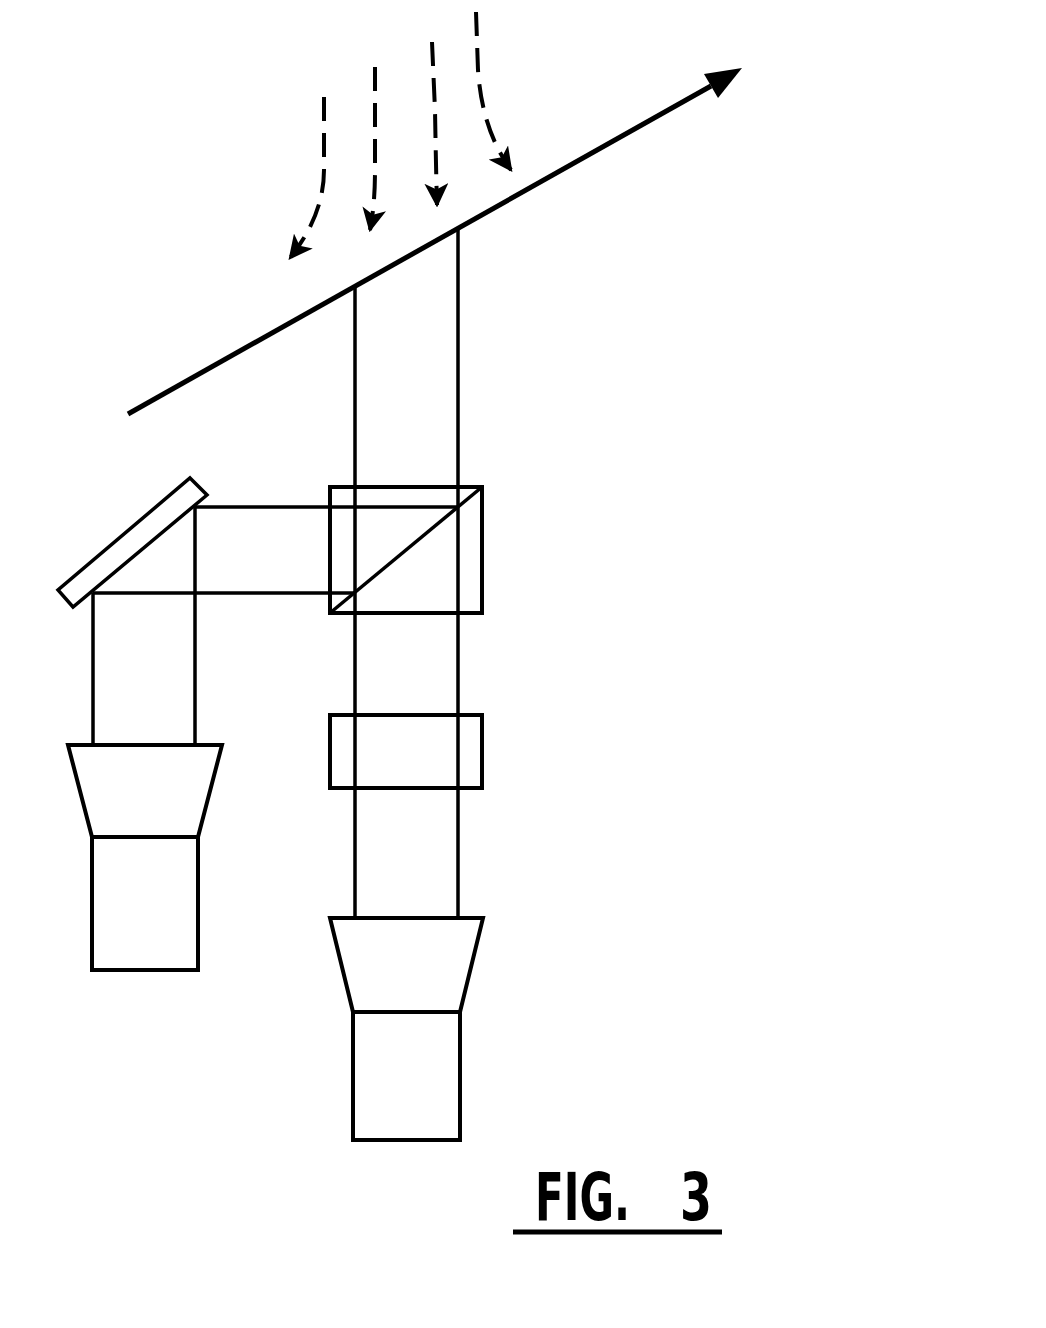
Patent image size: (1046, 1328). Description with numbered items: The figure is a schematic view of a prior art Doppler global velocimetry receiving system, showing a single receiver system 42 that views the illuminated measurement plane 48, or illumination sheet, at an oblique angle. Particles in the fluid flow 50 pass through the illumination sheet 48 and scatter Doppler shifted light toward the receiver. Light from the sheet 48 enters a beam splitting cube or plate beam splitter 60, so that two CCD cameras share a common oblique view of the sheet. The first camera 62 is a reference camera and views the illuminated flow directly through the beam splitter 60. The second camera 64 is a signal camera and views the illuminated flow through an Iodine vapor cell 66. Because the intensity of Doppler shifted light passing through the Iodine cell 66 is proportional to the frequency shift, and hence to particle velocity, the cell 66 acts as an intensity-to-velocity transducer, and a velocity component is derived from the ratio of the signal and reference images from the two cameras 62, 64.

The receiver system 42 is at (607, 350).
The illuminated measurement plane 48 is at (257, 338).
The fluid flow 50 is at (510, 82).
The beam splitter 60 is at (482, 535).
The first camera 62 is at (198, 915).
The second camera 64 is at (458, 1053).
The Iodine vapor cell 66 is at (482, 755).